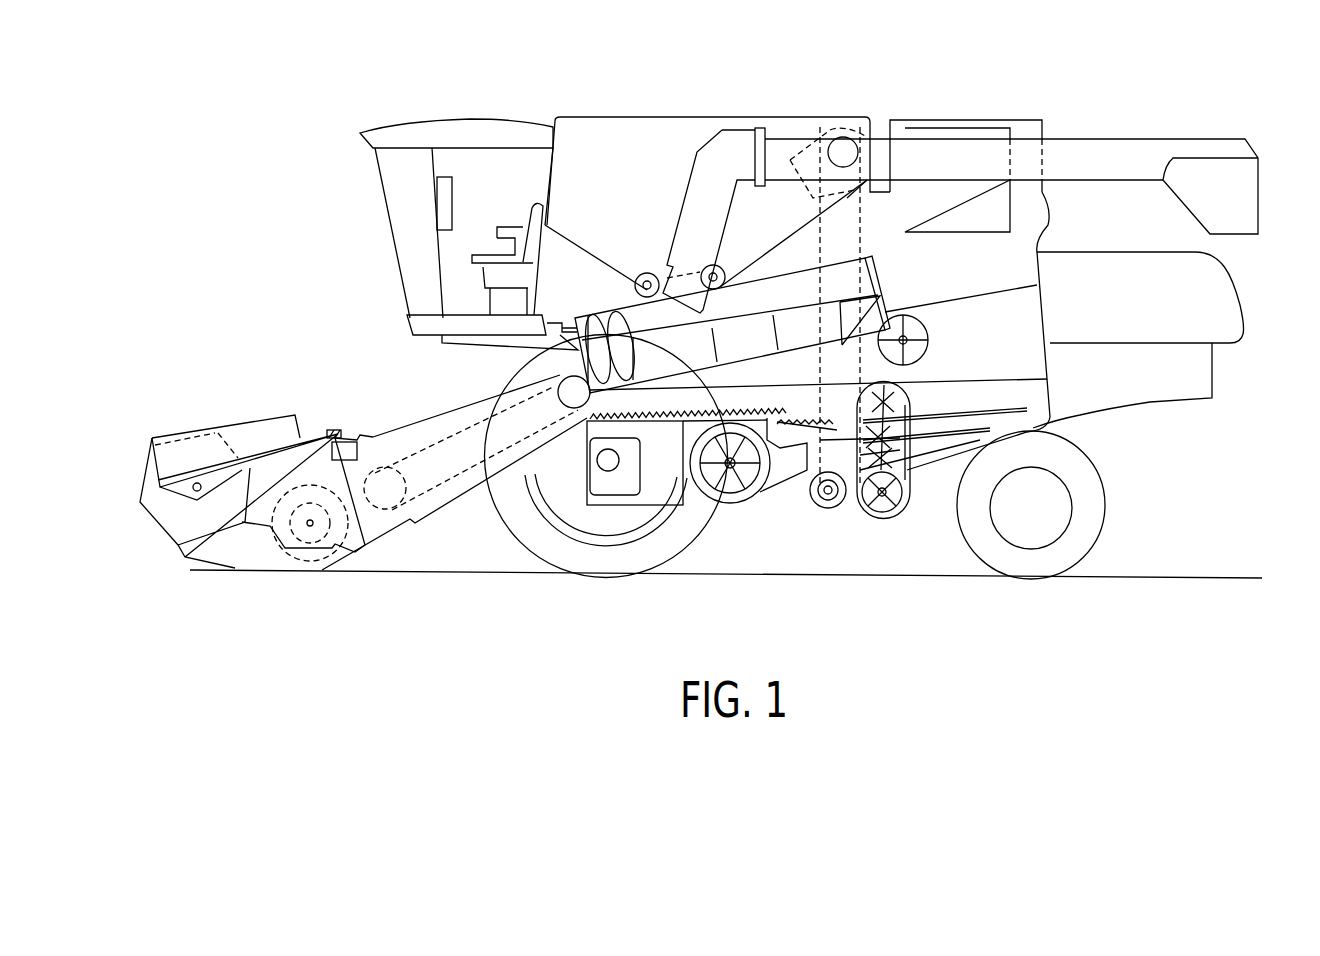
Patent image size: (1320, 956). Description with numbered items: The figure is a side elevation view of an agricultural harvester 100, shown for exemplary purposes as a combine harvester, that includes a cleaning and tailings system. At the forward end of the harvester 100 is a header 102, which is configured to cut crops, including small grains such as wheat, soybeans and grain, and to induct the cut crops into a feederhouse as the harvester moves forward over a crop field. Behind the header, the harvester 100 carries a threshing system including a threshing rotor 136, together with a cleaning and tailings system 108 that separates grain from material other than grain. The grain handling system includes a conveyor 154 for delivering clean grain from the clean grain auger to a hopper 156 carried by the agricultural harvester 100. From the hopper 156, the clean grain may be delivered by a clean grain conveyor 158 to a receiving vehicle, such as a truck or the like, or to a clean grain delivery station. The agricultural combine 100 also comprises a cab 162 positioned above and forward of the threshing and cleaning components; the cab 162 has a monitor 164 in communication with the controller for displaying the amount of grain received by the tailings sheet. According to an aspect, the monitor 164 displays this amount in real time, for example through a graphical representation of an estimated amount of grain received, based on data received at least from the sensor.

The agricultural harvester 100 is at (432, 103).
The header 102 is at (226, 414).
The cleaning and tailings system 108 is at (930, 403).
The threshing rotor 136 is at (587, 312).
The conveyor 154 is at (823, 227).
The hopper 156 is at (595, 133).
The clean grain conveyor 158 is at (1116, 155).
The cab 162 is at (397, 210).
The monitor 164 is at (462, 197).